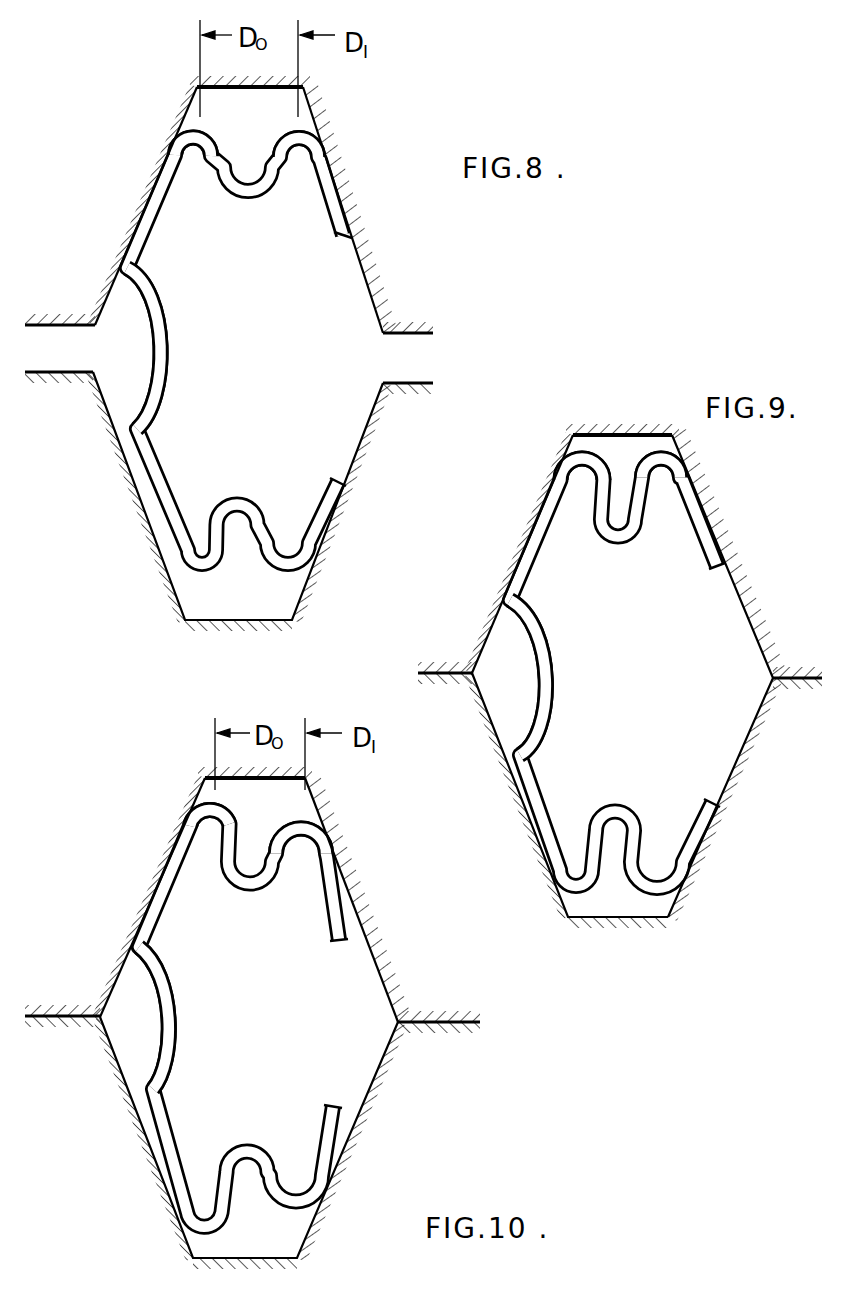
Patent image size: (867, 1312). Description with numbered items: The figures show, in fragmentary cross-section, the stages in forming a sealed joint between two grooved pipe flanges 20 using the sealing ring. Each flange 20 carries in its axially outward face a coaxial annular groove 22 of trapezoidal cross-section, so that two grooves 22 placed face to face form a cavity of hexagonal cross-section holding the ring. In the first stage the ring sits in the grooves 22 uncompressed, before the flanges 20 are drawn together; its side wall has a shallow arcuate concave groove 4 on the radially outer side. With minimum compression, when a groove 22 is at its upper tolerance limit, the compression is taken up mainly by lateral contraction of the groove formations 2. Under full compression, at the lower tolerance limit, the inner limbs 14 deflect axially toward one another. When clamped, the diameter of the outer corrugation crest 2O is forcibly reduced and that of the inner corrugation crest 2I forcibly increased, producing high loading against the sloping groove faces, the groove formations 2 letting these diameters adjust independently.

In FIG. 8, the groove formations 2 is at (262, 168).
In FIG. 9, the groove formations 2 is at (622, 513).
In FIG. 10, the groove formations 2 is at (241, 854).
In FIG. 8, the outer corrugation crest 2O is at (195, 142).
In FIG. 9, the outer corrugation crest 2O is at (577, 459).
In FIG. 10, the outer corrugation crest 2O is at (210, 818).
In FIG. 8, the inner corrugation crest 2I is at (297, 142).
In FIG. 9, the inner corrugation crest 2I is at (683, 460).
In FIG. 10, the inner corrugation crest 2I is at (301, 841).
In FIG. 8, the groove 4 is at (158, 347).
In FIG. 9, the groove 4 is at (542, 662).
In FIG. 10, the groove 4 is at (165, 994).
In FIG. 10, the inner limbs 14 is at (335, 922).
In FIG. 8, the pipe flanges 20 is at (116, 173).
In FIG. 9, the pipe flanges 20 is at (778, 559).
In FIG. 10, the pipe flanges 20 is at (119, 883).
In FIG. 8, the annular groove 22 is at (298, 106).
In FIG. 9, the annular groove 22 is at (744, 616).
In FIG. 10, the annular groove 22 is at (306, 800).